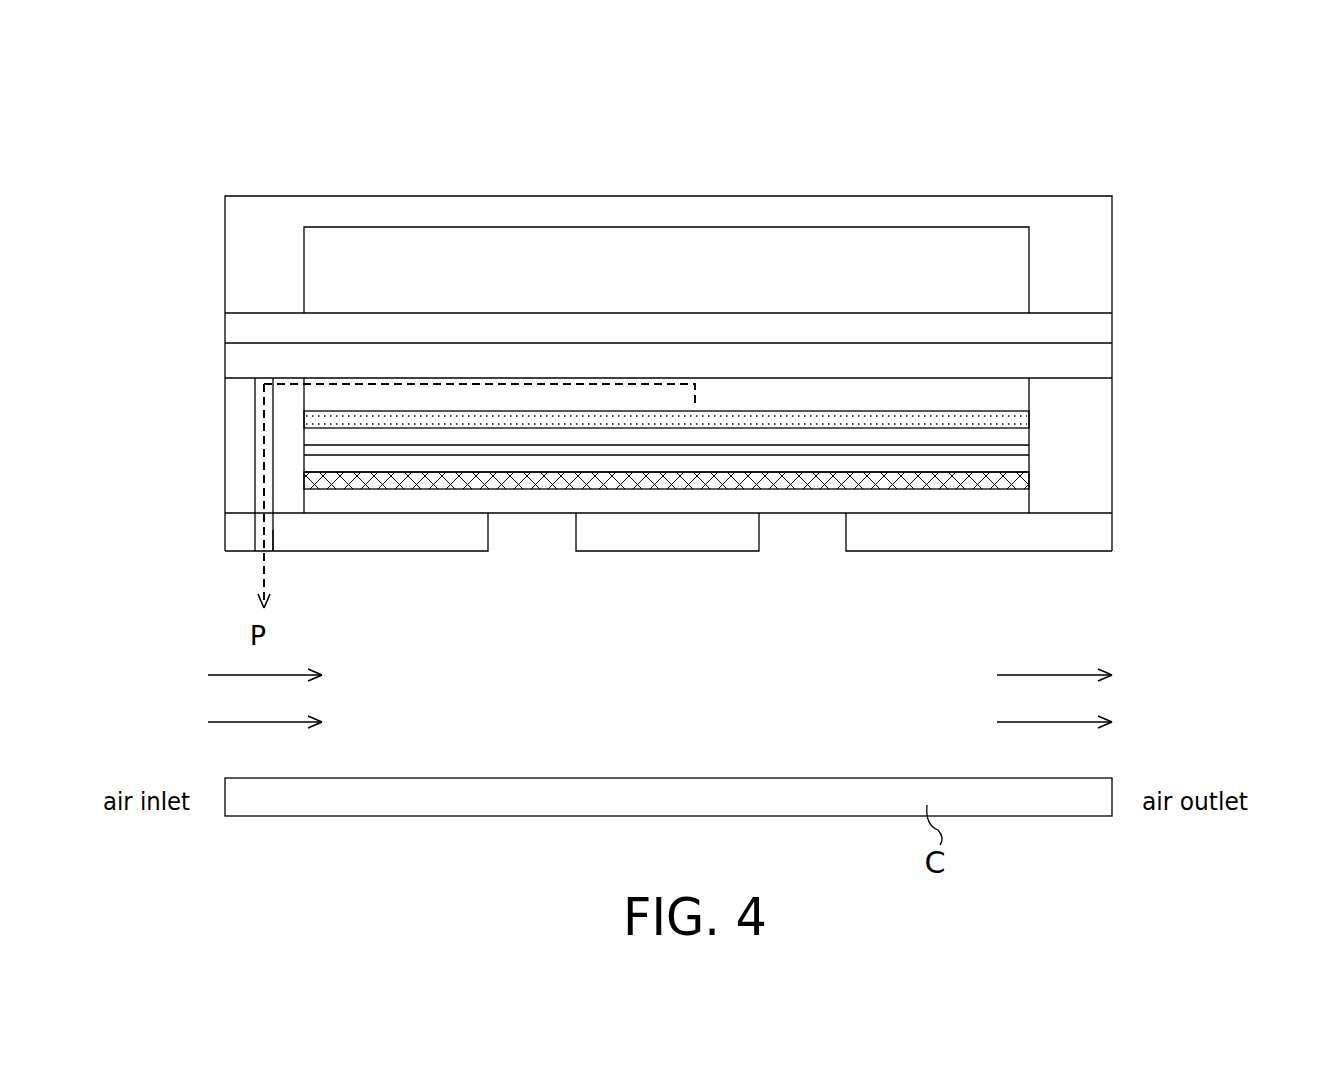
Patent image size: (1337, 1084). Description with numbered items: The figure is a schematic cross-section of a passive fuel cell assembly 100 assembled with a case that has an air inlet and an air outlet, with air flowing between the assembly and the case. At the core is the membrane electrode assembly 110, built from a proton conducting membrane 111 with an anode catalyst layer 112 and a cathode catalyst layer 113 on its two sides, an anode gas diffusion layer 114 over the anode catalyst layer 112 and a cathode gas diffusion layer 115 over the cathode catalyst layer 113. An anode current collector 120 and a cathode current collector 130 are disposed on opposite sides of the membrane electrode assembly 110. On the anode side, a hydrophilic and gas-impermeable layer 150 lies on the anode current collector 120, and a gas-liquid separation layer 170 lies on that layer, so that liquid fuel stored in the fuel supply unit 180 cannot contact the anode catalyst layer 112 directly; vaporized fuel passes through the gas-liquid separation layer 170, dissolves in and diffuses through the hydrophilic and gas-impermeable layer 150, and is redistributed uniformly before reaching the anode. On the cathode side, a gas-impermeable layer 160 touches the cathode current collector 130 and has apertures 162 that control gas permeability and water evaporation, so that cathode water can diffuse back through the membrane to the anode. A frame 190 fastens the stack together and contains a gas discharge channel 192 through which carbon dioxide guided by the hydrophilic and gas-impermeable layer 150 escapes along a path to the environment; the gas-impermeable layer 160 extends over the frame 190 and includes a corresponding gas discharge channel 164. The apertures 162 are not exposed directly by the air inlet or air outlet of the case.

The passive fuel cell assembly 100 is at (1007, 142).
The membrane electrode assembly 110 is at (1278, 392).
The proton conducting membrane 111 is at (1018, 449).
The anode catalyst layer 112 is at (1023, 438).
The cathode catalyst layer 113 is at (1018, 464).
The anode gas diffusion layer 114 is at (1030, 422).
The cathode gas diffusion layer 115 is at (1030, 482).
The anode current collector 120 is at (1018, 399).
The cathode current collector 130 is at (1007, 502).
The hydrophilic and gas-impermeable layer 150 is at (1087, 357).
The gas-impermeable layer 160 is at (393, 532).
The aperture 162 is at (498, 533).
The gas discharge channel 164 is at (273, 537).
The gas-liquid separation layer 170 is at (1073, 325).
The fuel supply unit 180 is at (1092, 212).
The frame 190 is at (240, 413).
The gas discharge channel 192 is at (255, 503).